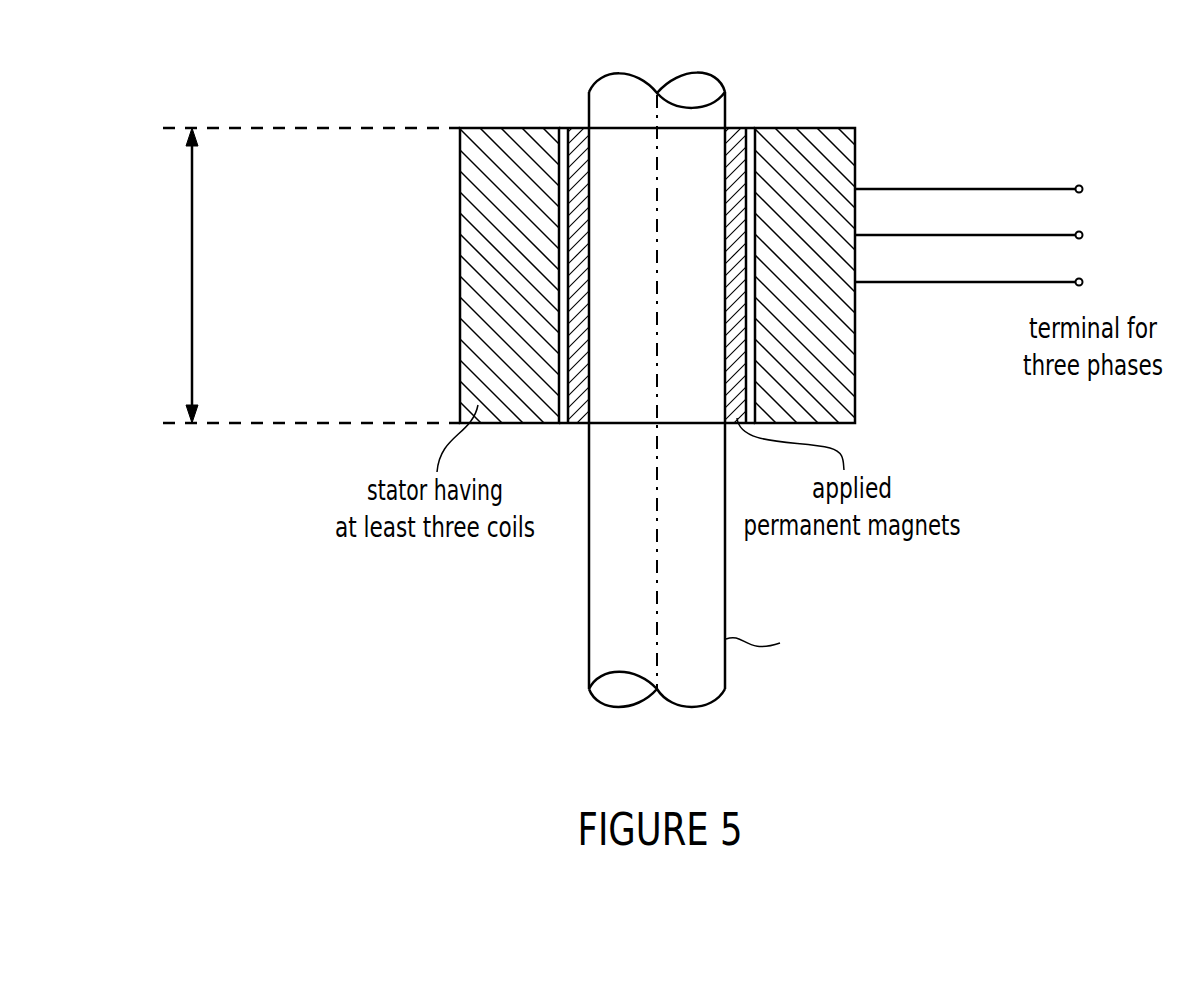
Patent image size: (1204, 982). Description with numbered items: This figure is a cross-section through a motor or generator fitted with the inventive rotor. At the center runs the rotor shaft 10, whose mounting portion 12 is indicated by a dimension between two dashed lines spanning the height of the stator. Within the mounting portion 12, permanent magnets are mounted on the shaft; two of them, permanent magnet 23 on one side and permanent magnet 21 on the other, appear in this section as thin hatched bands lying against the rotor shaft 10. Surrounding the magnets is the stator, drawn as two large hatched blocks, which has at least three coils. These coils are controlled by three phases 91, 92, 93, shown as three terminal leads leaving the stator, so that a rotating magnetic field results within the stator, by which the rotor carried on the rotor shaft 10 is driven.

The rotor shaft 10 is at (588, 642).
The mounting portion 12 is at (311, 275).
The permanent magnet 21 is at (737, 140).
The permanent magnet 23 is at (579, 140).
The phase 91 is at (1083, 189).
The phase 92 is at (1083, 235).
The phase 93 is at (1083, 282).